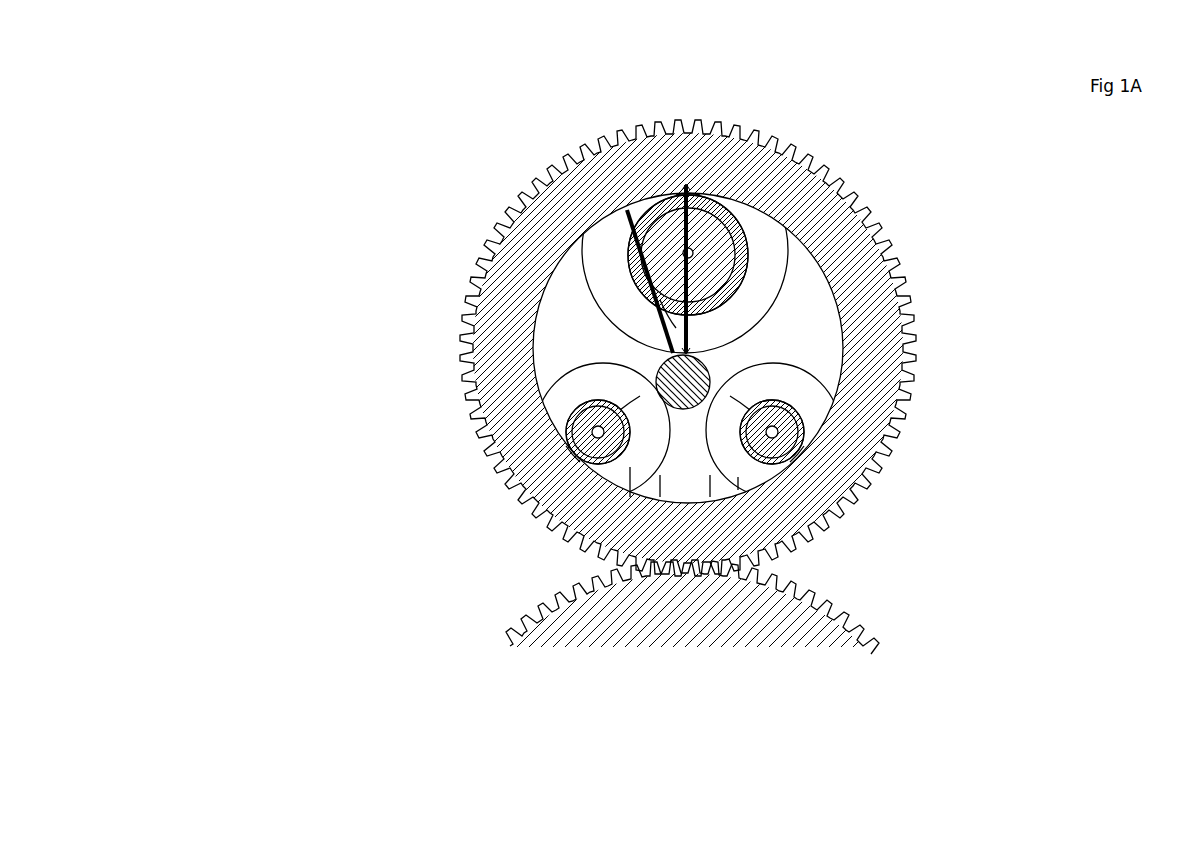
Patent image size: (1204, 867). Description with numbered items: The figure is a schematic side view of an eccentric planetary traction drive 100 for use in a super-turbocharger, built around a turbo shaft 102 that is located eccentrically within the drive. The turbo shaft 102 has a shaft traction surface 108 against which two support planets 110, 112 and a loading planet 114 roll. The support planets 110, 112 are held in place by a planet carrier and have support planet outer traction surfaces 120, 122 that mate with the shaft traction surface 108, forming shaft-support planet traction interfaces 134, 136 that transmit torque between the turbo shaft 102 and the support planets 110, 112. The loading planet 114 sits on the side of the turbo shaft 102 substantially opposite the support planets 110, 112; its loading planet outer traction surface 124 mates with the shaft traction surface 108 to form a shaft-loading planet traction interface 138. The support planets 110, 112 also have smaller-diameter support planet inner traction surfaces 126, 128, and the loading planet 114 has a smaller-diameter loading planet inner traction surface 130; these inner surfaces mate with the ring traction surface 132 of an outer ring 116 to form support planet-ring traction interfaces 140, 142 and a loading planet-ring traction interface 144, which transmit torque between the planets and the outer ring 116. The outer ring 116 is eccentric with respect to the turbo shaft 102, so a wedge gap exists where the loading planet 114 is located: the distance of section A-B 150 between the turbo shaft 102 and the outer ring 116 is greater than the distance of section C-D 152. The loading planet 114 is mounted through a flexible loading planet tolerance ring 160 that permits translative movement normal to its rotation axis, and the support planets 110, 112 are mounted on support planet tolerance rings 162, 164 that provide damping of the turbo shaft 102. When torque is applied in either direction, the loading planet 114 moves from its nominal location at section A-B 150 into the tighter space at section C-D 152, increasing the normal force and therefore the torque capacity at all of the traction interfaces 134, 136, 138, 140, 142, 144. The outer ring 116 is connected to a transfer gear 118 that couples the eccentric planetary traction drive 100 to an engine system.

The eccentric traction drive 100 is at (367, 131).
The turbo shaft 102 is at (911, 343).
The shaft traction surface 108 is at (700, 387).
The support planet 110 is at (438, 574).
The support planet 112 is at (910, 581).
The loading planet 114 is at (713, 163).
The outer ring 116 is at (561, 348).
The transfer gear 118 is at (672, 618).
The support planet outer traction surface 120 is at (680, 573).
The support planet outer traction surface 122 is at (715, 560).
The loading planet outer traction surface 124 is at (817, 204).
The support planet inner traction surface 126 is at (572, 433).
The support planet inner traction surface 128 is at (800, 436).
The loading planet inner traction surface 130 is at (641, 255).
The ring traction surface 132 is at (533, 345).
The shaft-support planet traction interface 134 is at (580, 460).
The shaft-support planet traction interface 136 is at (765, 482).
The shaft-loading planet traction interface 138 is at (650, 287).
The support planet-ring traction interface 140 is at (580, 458).
The support planet-ring traction interface 142 is at (800, 457).
The loading planet-ring traction interface 144 is at (690, 193).
The section A-B 150 is at (692, 268).
The section C-D 152 is at (650, 316).
The loading planet tolerance ring 160 is at (632, 230).
The support planet tolerance ring 162 is at (567, 428).
The support planet tolerance ring 164 is at (785, 464).